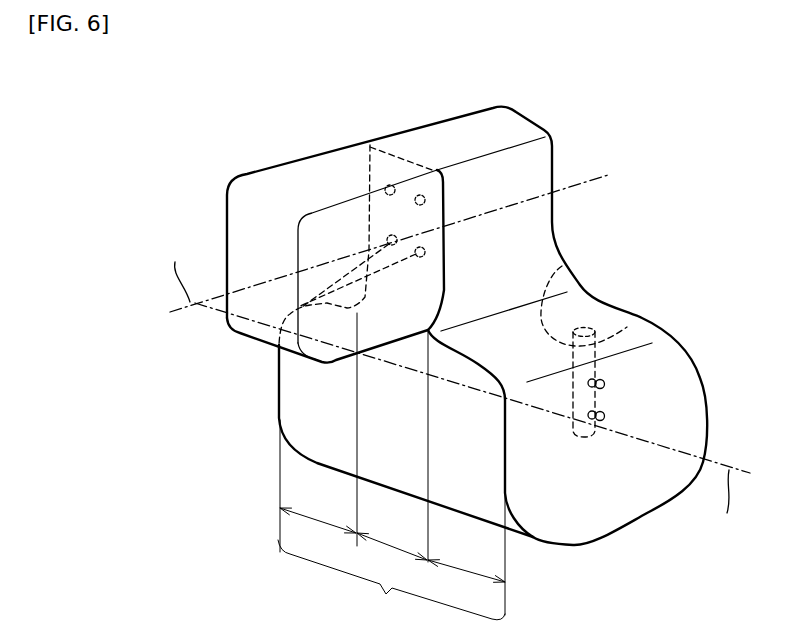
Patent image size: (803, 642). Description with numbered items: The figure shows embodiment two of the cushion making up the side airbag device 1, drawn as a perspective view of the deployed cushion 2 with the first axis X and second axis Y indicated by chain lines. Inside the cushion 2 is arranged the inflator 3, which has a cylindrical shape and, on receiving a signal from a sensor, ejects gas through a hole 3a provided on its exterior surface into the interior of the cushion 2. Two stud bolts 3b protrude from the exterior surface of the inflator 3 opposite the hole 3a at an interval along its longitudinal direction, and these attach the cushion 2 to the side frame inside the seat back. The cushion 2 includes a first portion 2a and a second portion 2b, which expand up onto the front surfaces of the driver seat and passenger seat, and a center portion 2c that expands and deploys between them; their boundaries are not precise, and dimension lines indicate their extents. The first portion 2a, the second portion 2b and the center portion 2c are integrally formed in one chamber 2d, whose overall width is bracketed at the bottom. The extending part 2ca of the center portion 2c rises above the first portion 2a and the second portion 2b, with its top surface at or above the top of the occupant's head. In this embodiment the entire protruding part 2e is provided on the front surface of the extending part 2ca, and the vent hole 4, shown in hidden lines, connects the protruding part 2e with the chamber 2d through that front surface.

The side airbag device 1 is at (620, 268).
The cushion 2 is at (613, 297).
The first portion 2a is at (466, 554).
The second portion 2b is at (318, 432).
The center portion 2c is at (392, 447).
The chamber 2d is at (391, 581).
The protruding part 2e is at (315, 188).
The extending part 2ca is at (540, 173).
The inflator 3 is at (627, 327).
The hole 3a is at (562, 266).
The stud bolts 3b is at (607, 383).
The vent hole 4 is at (424, 250).